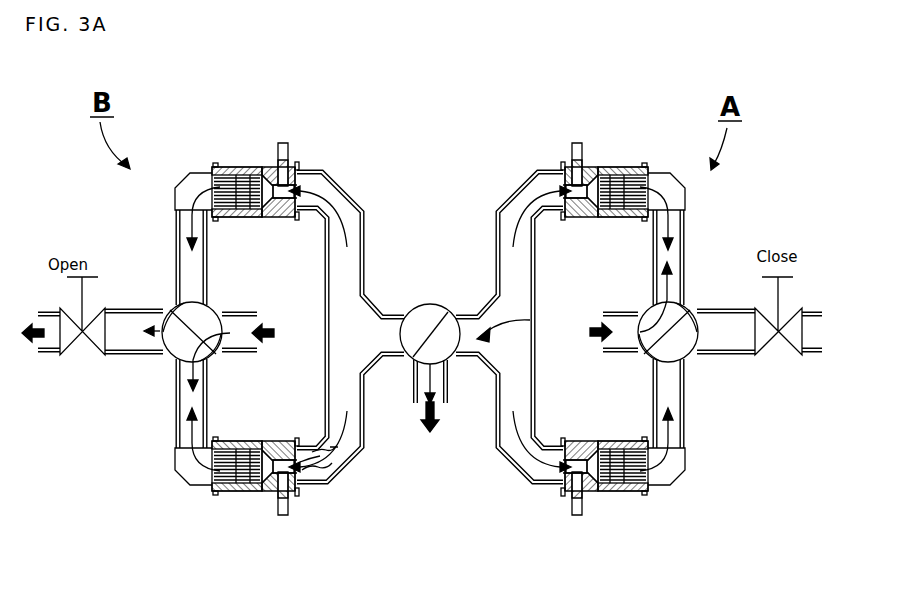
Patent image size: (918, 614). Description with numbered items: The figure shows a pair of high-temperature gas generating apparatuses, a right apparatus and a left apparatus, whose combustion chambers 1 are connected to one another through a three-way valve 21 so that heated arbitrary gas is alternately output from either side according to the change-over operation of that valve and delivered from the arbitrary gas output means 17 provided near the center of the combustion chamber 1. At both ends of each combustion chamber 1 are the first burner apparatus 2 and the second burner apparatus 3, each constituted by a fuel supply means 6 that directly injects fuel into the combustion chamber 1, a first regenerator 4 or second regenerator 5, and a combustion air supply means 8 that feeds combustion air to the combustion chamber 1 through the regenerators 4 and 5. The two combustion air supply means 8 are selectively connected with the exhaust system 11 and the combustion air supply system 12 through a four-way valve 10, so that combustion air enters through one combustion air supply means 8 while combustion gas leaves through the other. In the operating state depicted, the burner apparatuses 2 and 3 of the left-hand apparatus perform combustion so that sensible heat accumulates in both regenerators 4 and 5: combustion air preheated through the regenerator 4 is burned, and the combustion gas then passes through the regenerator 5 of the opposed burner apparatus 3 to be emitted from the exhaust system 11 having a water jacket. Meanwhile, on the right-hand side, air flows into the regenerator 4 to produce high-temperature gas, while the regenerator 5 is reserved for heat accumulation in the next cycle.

The combustion chamber 1 is at (355, 278).
The first burner apparatus 2 is at (554, 153).
The second burner apparatus 3 is at (306, 150).
The first regenerator 4 is at (633, 168).
The second regenerator 5 is at (227, 165).
The fuel supply means 6 is at (281, 143).
The combustion air supply means 8 is at (176, 243).
The four-way valve 10 is at (207, 378).
The exhaust system 11 is at (125, 323).
The combustion air supply system 12 is at (240, 325).
The arbitrary gas output means 17 is at (418, 383).
The three-way valve 21 is at (428, 312).